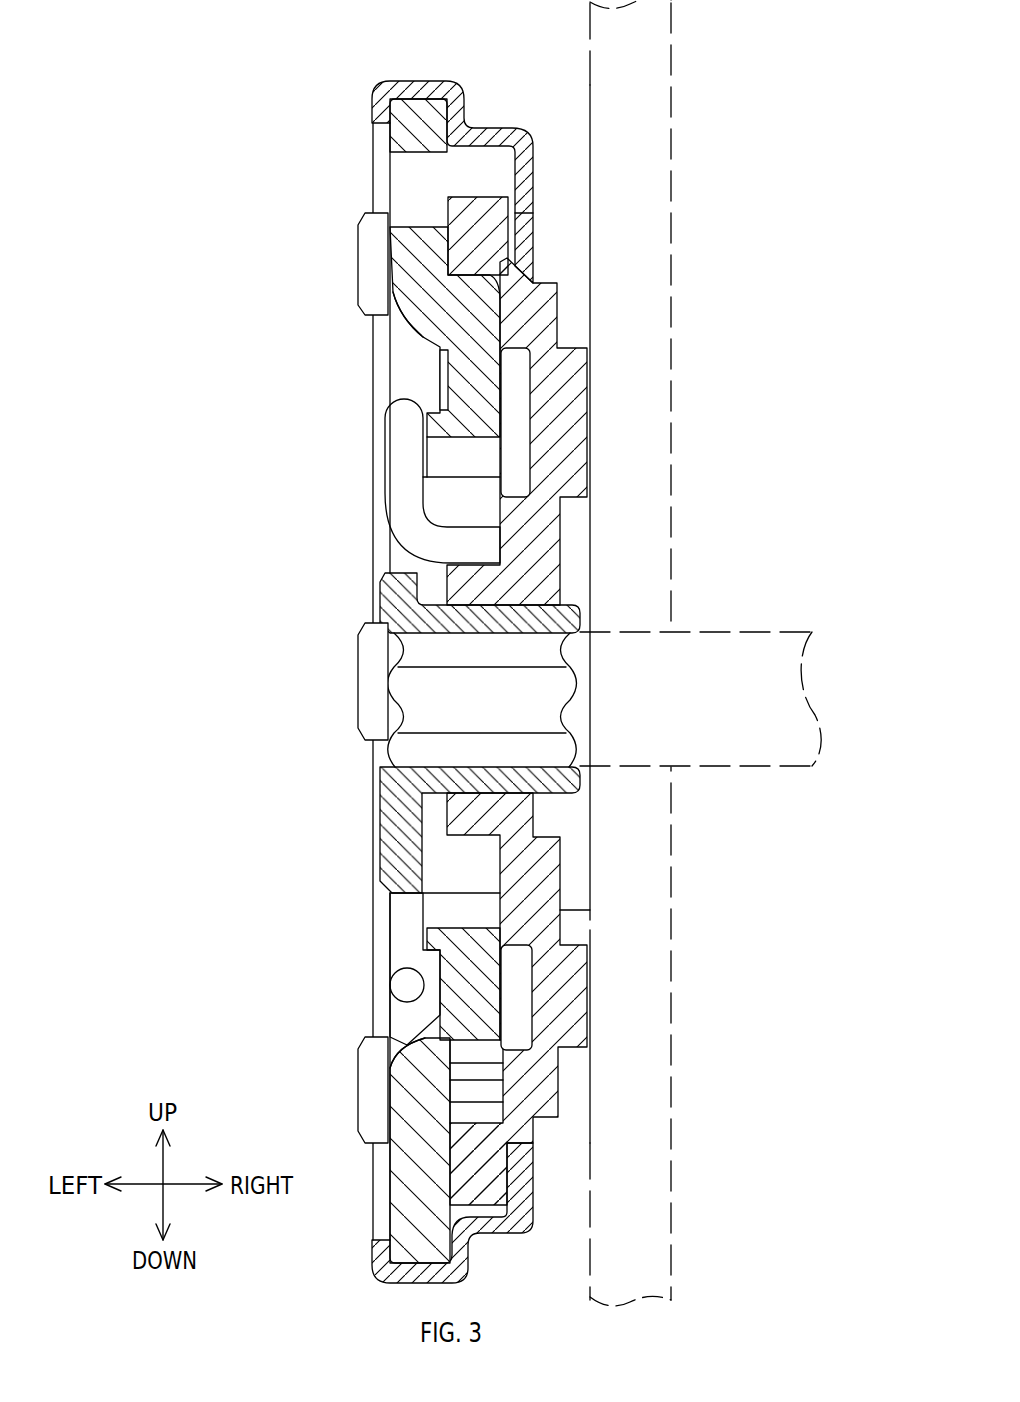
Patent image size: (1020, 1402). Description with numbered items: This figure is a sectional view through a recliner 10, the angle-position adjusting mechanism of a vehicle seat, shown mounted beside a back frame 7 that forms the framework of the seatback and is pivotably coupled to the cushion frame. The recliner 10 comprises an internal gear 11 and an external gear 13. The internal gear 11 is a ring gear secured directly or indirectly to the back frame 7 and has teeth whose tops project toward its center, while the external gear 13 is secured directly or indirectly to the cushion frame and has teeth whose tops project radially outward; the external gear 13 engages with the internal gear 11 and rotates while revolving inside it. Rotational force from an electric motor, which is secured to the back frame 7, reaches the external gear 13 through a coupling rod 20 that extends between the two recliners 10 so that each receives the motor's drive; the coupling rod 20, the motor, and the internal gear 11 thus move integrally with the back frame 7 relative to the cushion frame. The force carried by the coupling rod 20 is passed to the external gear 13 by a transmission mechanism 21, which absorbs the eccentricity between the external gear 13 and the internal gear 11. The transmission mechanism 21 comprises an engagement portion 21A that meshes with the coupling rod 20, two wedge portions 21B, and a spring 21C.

The back frame 7 is at (590, 85).
The recliner 10 is at (338, 128).
The internal gear 11 is at (487, 213).
The external gear 13 is at (418, 331).
The coupling rod 20 is at (762, 632).
The transmission mechanism 21 is at (419, 681).
The engagement portion 21A is at (393, 603).
The wedge portion 21B is at (393, 553).
The spring 21C is at (402, 440).